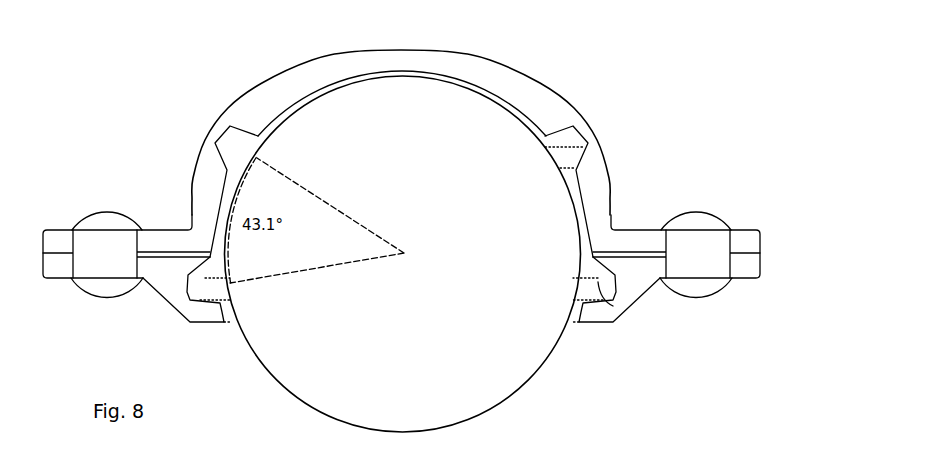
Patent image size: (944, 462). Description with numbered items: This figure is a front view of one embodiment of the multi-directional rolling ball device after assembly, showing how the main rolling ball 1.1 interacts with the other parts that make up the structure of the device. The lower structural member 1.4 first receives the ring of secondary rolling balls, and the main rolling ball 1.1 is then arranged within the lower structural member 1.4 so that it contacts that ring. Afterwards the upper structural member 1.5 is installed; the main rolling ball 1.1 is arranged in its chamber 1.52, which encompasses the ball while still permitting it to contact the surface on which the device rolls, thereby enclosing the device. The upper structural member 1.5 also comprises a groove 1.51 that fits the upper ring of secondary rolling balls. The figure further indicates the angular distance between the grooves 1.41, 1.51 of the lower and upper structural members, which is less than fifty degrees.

The main rolling ball 1.1 is at (490, 365).
The lower structural member 1.4 is at (175, 288).
The groove 1.41 is at (650, 277).
The upper structural member 1.5 is at (200, 184).
The groove 1.51 is at (583, 130).
The chamber 1.52 is at (480, 85).